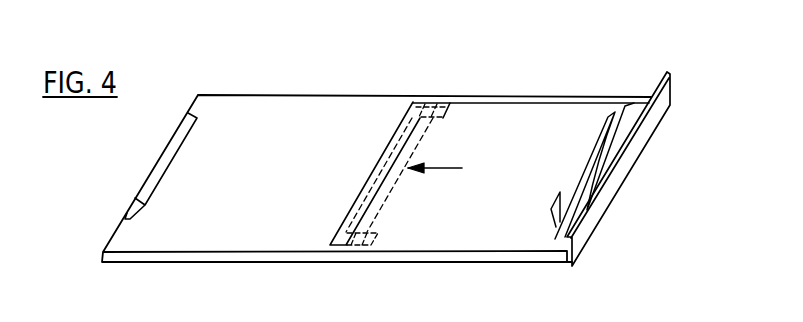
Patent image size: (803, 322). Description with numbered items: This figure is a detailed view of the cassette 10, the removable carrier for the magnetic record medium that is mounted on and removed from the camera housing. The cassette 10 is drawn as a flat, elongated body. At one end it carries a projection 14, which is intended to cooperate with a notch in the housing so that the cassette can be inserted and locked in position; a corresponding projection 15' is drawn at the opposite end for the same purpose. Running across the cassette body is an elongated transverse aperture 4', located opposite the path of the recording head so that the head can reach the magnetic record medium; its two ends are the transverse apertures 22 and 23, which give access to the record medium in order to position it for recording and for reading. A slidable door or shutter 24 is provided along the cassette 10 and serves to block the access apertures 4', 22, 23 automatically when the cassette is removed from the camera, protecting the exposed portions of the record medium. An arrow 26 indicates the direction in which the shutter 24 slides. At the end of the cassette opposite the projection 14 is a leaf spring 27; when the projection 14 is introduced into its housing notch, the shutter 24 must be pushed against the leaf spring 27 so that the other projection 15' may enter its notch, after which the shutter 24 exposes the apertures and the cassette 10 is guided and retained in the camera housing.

The cassette 10 is at (302, 90).
The projection 14 is at (163, 165).
The transverse aperture 22 is at (427, 98).
The transverse aperture 23 is at (359, 248).
The slidable door or shutter 24 is at (512, 118).
The elongated transverse aperture 4' is at (411, 173).
The insertion direction arrow 26 is at (433, 173).
The latch tongue 15' is at (561, 171).
The leaf spring 27 is at (600, 163).